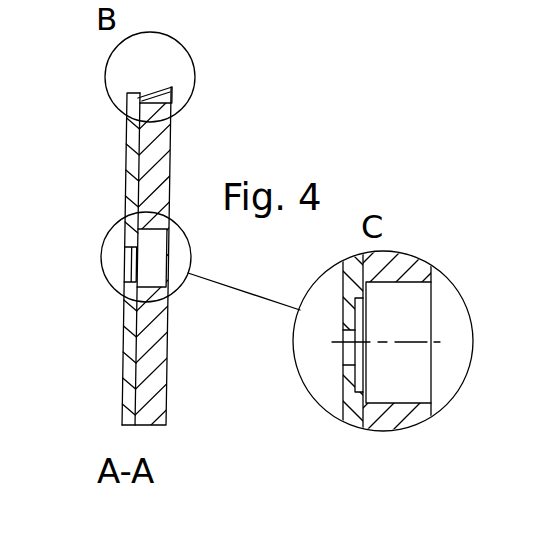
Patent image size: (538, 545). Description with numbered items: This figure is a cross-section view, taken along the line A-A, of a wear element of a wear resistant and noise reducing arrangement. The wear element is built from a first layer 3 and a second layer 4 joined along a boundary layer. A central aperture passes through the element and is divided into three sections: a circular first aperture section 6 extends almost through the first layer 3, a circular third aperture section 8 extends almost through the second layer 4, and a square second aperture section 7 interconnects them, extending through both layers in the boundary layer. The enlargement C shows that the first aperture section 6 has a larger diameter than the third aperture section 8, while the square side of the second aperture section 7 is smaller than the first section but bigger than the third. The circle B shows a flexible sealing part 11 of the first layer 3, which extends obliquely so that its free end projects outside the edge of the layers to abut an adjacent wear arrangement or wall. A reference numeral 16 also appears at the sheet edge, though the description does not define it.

The first layer 3 is at (165, 417).
The second layer 4 is at (130, 360).
The first aperture section 6 is at (422, 293).
The second aperture section 7 is at (357, 312).
The third aperture section 8 is at (347, 331).
The flexible sealing part 11 is at (163, 90).
The element 16 is at (533, 27).